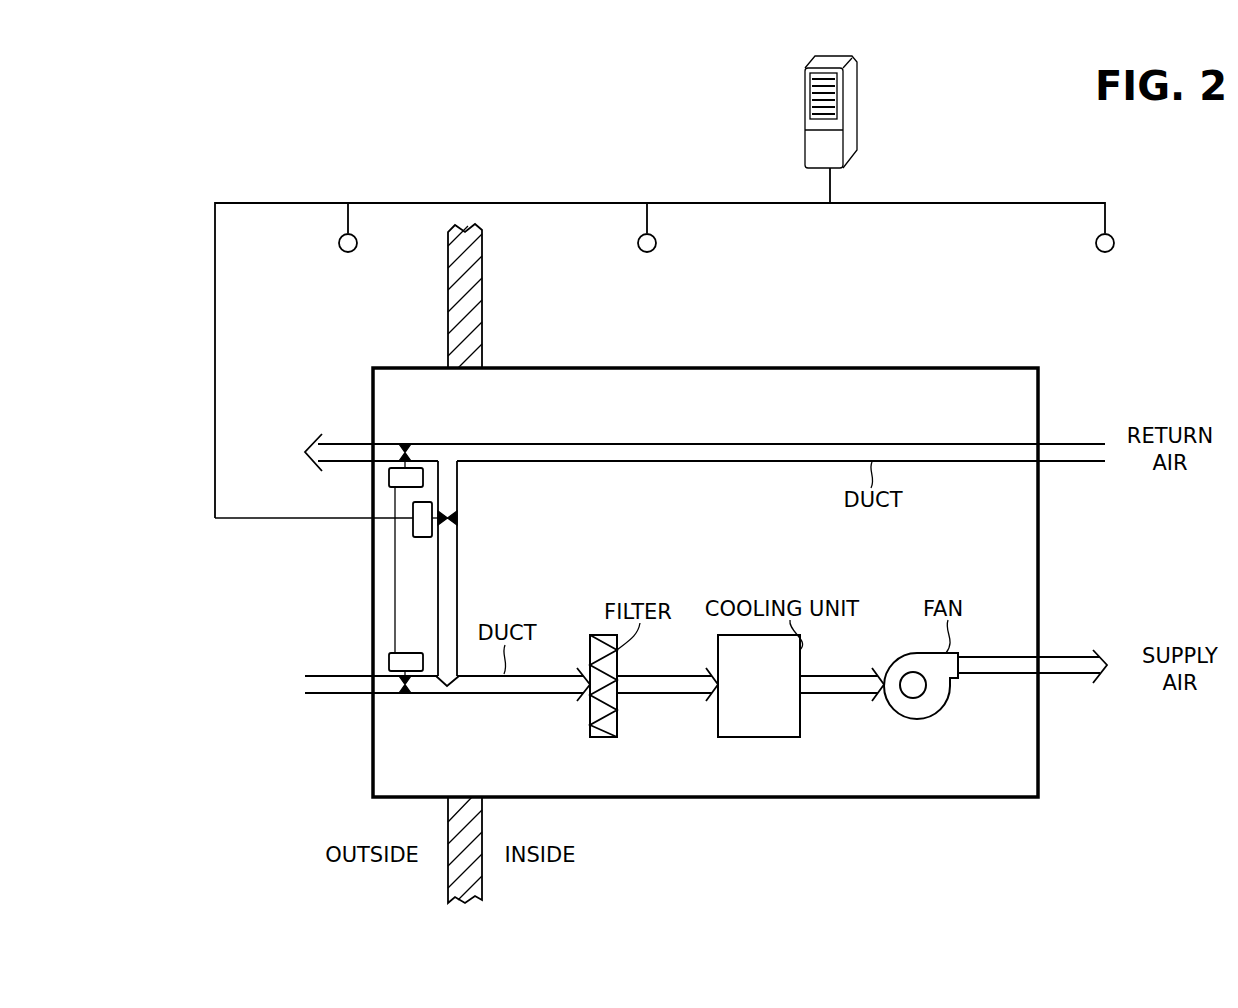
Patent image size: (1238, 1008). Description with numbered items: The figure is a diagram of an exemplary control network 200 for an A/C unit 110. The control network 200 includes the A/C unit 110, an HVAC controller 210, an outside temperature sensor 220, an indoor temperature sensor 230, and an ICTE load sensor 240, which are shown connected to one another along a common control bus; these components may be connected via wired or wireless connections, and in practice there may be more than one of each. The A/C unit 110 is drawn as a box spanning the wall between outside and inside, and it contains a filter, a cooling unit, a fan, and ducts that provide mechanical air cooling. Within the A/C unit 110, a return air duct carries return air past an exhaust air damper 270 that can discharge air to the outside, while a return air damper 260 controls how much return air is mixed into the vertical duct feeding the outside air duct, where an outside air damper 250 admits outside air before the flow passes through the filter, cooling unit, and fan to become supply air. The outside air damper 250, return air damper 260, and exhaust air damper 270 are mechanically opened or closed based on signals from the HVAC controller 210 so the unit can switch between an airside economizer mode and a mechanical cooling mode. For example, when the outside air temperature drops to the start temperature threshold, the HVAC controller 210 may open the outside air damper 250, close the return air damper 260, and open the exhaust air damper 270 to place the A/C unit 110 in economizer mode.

The control network 200 is at (165, 92).
The A/C unit 110 is at (850, 368).
The HVAC controller 210 is at (805, 118).
The outside temperature sensor 220 is at (348, 253).
The indoor temperature sensor 230 is at (647, 253).
The ICTE load sensor 240 is at (1105, 253).
The outside air damper 250 is at (405, 693).
The return air damper 260 is at (457, 518).
The exhaust air damper 270 is at (405, 444).